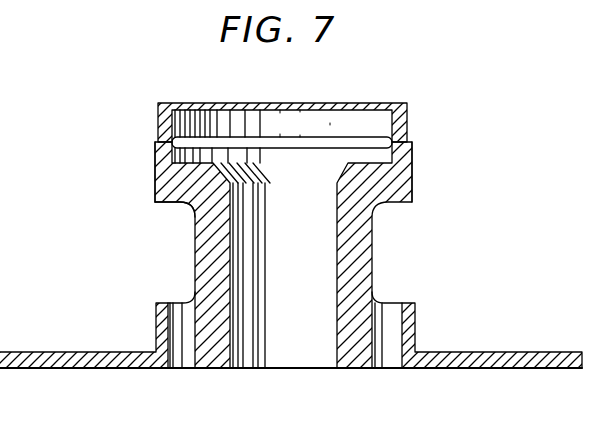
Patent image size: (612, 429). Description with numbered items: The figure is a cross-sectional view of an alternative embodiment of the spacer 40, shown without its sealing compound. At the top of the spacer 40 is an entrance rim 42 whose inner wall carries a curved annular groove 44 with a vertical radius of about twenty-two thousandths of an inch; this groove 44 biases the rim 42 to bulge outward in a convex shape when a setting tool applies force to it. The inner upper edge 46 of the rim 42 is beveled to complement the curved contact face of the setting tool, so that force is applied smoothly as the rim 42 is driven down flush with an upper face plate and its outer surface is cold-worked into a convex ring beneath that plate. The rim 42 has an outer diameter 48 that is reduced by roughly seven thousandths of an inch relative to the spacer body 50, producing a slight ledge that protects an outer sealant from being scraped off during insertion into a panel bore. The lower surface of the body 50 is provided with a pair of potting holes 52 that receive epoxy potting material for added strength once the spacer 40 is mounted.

The spacer 40 is at (386, 262).
The entrance rim 42 is at (158, 157).
The curved annular groove 44 is at (212, 138).
The inner upper edge 46 is at (171, 103).
The outer diameter 48 is at (158, 121).
The spacer body 50 is at (155, 194).
The potting holes 52 is at (187, 358).